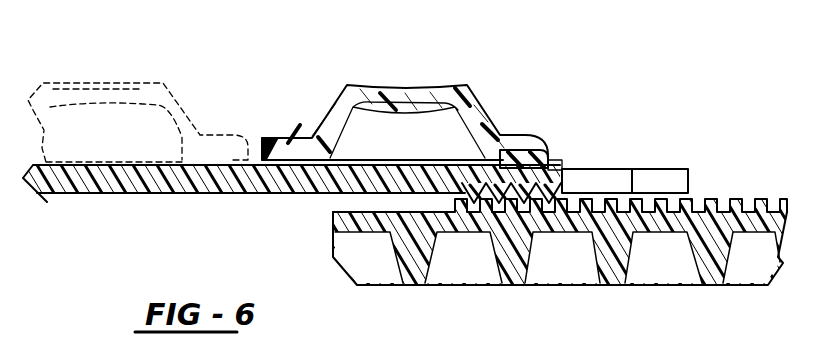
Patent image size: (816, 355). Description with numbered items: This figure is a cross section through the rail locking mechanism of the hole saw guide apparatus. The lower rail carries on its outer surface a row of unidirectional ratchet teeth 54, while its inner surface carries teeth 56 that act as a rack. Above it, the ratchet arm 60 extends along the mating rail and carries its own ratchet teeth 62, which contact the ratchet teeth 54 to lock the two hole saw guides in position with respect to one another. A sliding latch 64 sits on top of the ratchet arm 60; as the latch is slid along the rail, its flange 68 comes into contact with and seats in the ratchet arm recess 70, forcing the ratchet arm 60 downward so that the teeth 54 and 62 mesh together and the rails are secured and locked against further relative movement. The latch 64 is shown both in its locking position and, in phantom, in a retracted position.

The ratchet teeth 54 is at (636, 200).
The teeth 56 is at (625, 271).
The ratchet arm 60 is at (429, 178).
The ratchet teeth 62 is at (562, 181).
The sliding latch 64 is at (333, 97).
The flange 68 is at (519, 168).
The ratchet arm recess 70 is at (564, 166).